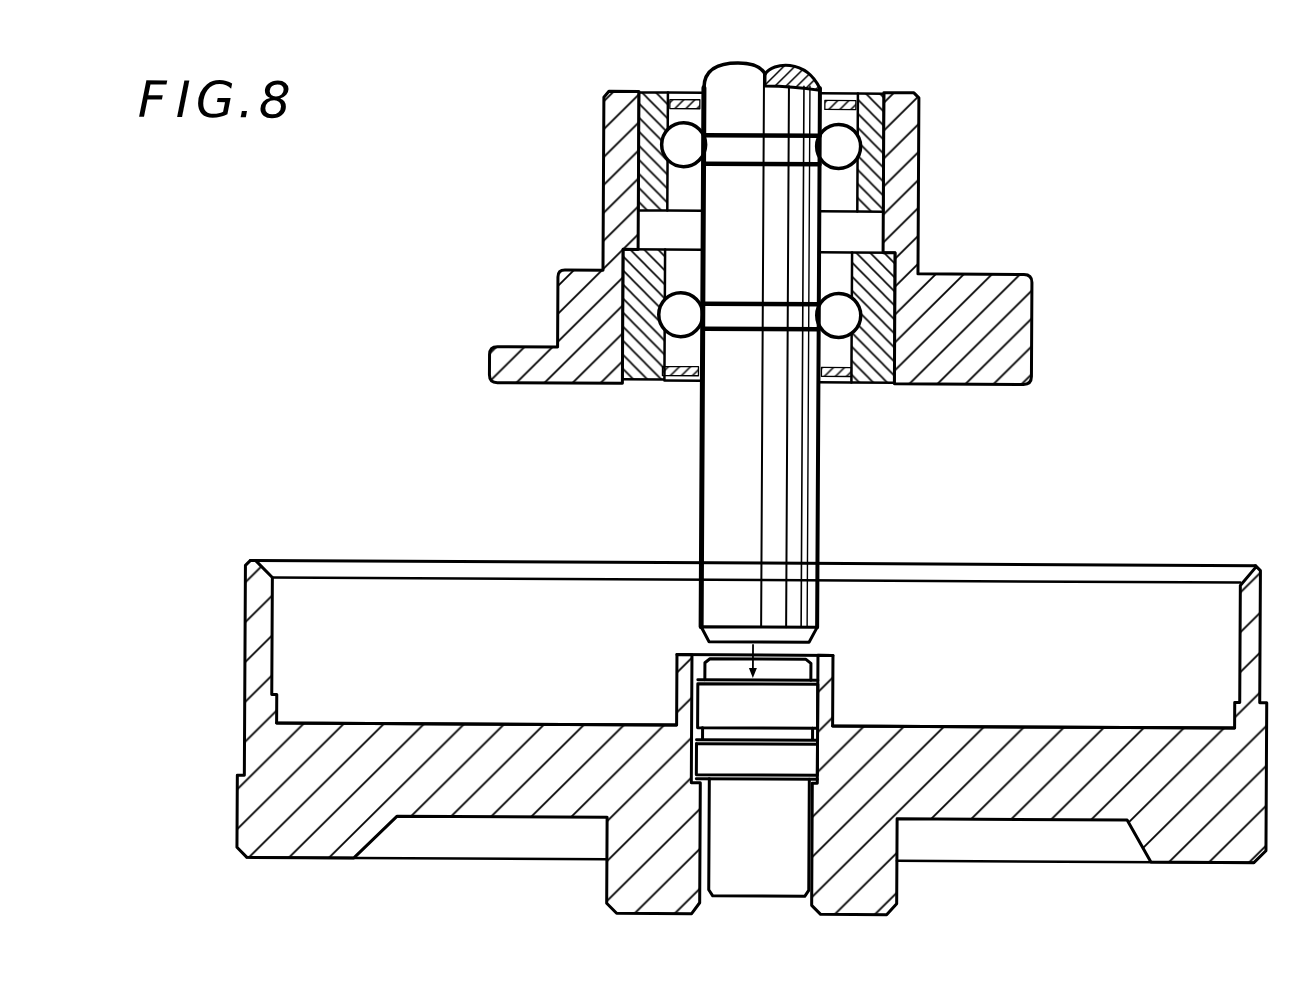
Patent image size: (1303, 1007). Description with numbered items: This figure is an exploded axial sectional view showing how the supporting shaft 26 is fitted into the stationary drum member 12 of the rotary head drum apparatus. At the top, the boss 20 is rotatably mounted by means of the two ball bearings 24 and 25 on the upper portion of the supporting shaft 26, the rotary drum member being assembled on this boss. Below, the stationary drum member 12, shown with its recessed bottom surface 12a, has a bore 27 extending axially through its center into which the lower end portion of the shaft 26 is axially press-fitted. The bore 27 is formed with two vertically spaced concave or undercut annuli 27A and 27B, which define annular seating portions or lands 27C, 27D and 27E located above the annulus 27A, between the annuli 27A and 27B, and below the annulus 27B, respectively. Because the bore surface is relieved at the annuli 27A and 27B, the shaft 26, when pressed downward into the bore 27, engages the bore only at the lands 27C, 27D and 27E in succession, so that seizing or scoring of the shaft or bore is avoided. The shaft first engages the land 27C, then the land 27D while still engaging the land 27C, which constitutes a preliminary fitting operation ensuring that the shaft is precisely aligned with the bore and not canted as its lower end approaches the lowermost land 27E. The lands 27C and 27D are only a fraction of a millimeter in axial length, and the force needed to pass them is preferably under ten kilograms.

The stationary drum member 12 is at (1050, 601).
The bottom surface of base plate recess 12a is at (1042, 726).
The boss 20 is at (957, 272).
The ball bearing 24 is at (882, 152).
The ball bearing 25 is at (669, 319).
The supporting shaft 26 is at (806, 437).
The bore 27 is at (785, 773).
The concave annulus 27A is at (690, 703).
The concave annulus 27B is at (690, 765).
The land 27C is at (810, 668).
The land 27D is at (809, 724).
The land 27E is at (812, 871).